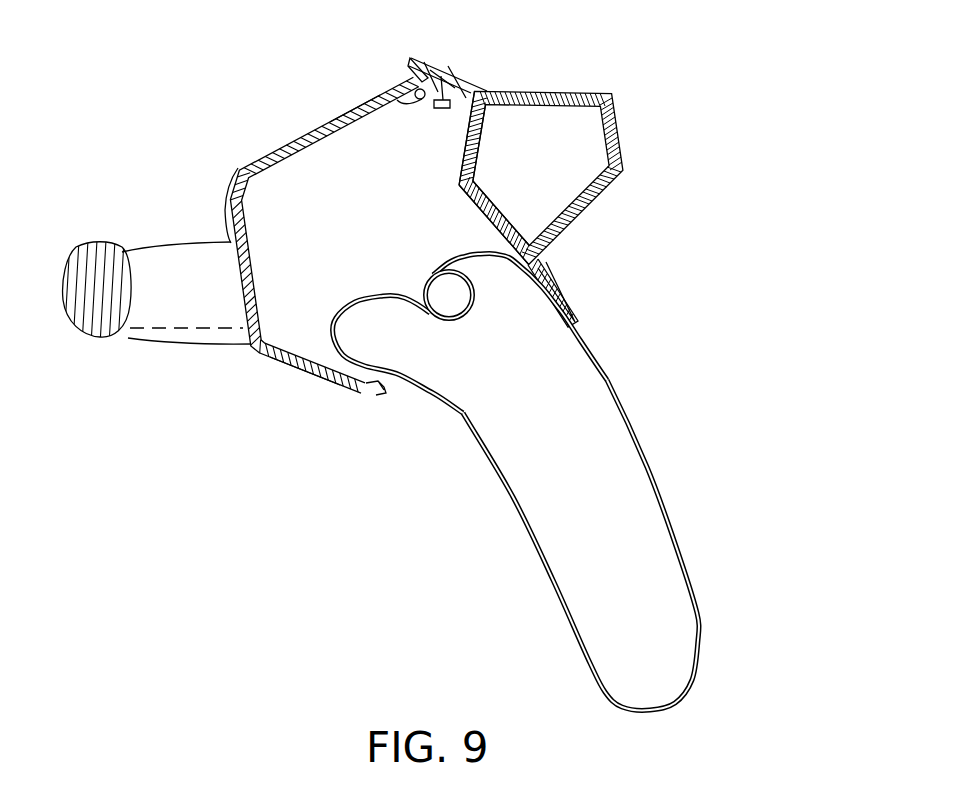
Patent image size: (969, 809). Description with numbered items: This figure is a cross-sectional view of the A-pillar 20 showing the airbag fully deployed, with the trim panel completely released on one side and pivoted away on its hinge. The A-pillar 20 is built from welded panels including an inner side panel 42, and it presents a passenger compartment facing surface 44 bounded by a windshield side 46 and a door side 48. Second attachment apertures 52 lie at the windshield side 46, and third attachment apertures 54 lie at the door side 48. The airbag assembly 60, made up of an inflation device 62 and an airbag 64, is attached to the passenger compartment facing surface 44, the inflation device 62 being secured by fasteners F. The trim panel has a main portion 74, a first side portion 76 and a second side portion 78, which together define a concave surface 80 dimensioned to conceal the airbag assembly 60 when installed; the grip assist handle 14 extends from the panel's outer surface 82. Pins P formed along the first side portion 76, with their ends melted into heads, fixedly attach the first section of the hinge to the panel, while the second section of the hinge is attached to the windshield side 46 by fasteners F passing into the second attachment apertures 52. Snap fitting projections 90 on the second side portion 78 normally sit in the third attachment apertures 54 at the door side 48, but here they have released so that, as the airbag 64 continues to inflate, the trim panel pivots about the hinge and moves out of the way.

The grip assist handle 14 is at (82, 282).
The A-pillar 20 is at (612, 95).
The inner side panel 42 is at (462, 160).
The passenger compartment facing surface 44 is at (460, 185).
The windshield side 46 is at (420, 60).
The door side 48 is at (582, 310).
The second attachment apertures 52 is at (445, 80).
The third attachment apertures 54 is at (560, 310).
The airbag assembly 60 is at (647, 453).
The inflation device 62 is at (436, 272).
The airbag 64 is at (697, 608).
The main portion 74 is at (234, 278).
The first side portion 76 is at (295, 138).
The second side portion 78 is at (320, 383).
The concave surface 80 is at (358, 128).
The outer surface 82 is at (228, 184).
The snap fitting projections 90 is at (385, 392).
The pins P is at (402, 108).
The fasteners F is at (440, 108).